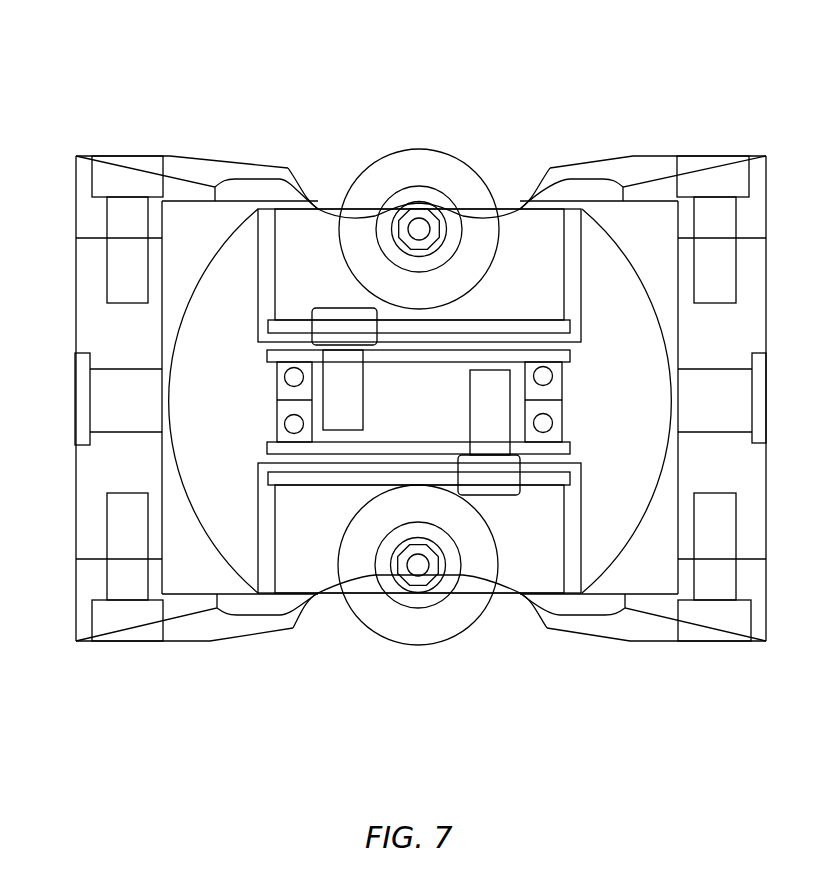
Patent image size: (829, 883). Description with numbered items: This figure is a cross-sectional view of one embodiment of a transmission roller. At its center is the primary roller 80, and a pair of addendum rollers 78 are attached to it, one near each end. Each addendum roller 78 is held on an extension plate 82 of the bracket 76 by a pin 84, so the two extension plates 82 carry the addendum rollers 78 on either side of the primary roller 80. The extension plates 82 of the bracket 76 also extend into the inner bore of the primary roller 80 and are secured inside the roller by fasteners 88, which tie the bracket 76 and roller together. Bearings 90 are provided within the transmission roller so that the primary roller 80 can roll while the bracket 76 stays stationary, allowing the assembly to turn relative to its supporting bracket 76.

The bracket 76 is at (92, 298).
The addendum roller 78 is at (448, 178).
The primary roller 80 is at (200, 372).
The extension plate 82 is at (615, 170).
The pin 84 is at (418, 229).
The fastener 88 is at (335, 342).
The bearing 90 is at (283, 433).